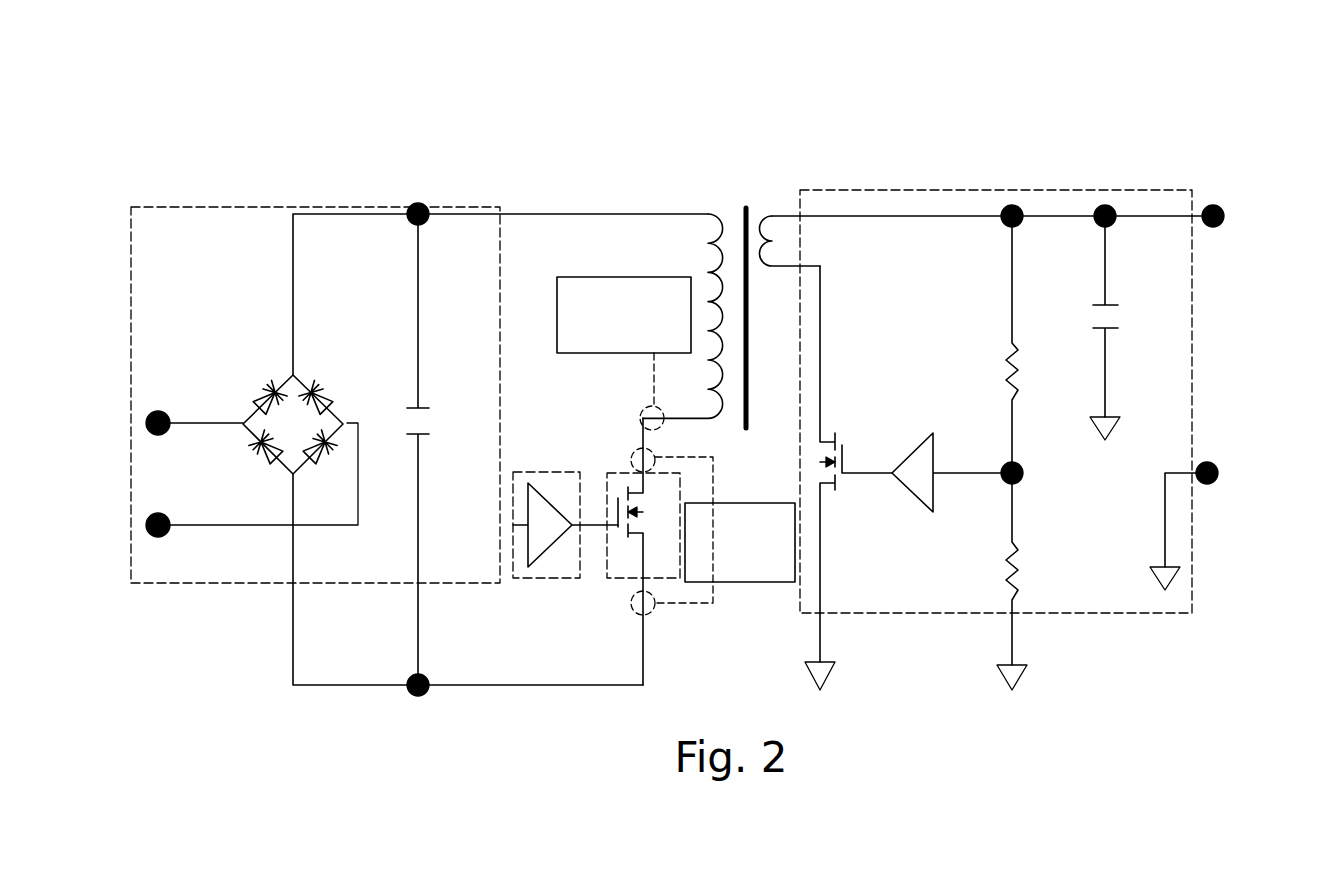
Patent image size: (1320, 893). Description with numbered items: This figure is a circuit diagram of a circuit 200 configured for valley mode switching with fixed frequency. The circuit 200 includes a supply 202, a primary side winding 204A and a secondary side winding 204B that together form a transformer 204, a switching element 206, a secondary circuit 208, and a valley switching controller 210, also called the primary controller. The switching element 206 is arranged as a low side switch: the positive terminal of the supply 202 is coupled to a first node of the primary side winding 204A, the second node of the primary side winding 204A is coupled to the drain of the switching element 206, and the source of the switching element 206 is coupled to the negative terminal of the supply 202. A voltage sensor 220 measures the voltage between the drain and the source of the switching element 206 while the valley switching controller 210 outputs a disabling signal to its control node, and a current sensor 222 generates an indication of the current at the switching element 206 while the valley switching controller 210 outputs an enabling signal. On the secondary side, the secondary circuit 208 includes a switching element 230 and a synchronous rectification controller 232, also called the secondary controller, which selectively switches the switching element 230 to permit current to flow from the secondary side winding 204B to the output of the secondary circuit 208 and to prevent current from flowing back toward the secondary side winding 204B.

The circuit 200 is at (1108, 87).
The supply 202 is at (458, 206).
The transformer 204 is at (723, 208).
The primary side winding 204A is at (667, 218).
The secondary side winding 204B is at (775, 214).
The switching element 206 is at (668, 582).
The secondary circuit 208 is at (1152, 190).
The valley switching controller 210 is at (570, 582).
The voltage sensor 220 is at (726, 576).
The current sensor 222 is at (624, 353).
The switching element 230 is at (823, 437).
The synchronous rectification controller 232 is at (910, 490).